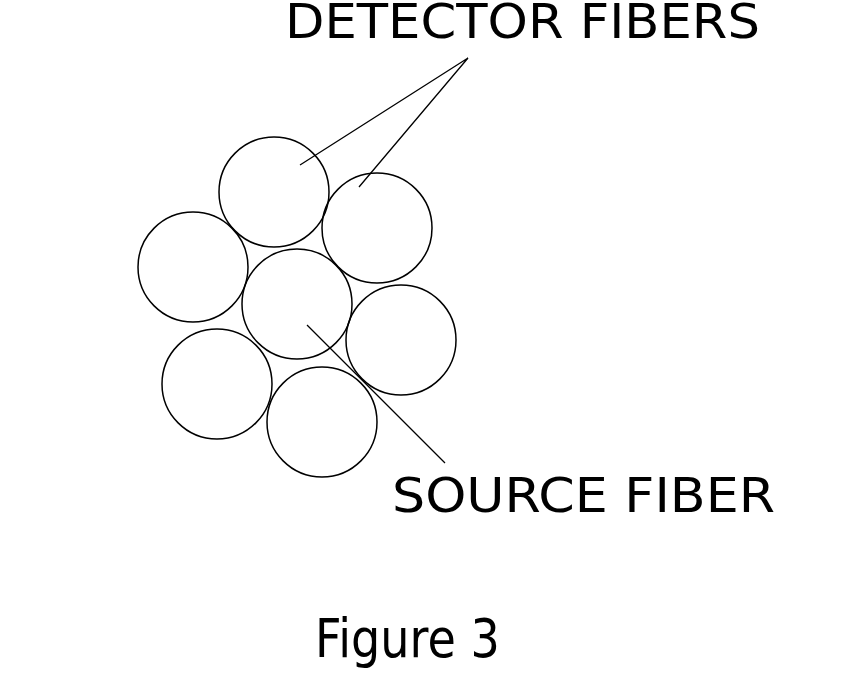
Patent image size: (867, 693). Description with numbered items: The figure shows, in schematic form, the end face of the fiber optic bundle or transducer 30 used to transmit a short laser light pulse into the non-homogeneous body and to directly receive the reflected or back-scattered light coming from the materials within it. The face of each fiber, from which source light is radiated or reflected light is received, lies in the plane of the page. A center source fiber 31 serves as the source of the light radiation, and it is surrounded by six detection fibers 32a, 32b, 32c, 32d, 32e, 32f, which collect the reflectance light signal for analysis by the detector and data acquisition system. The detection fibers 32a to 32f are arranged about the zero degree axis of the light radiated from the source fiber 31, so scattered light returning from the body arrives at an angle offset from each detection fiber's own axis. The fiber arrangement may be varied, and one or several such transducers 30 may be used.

The fiber optic bundle or transducer 30 is at (133, 140).
The source fiber 31 is at (285, 320).
The detection fiber 32a is at (427, 342).
The detection fiber 32b is at (400, 207).
The detection fiber 32c is at (252, 163).
The detection fiber 32d is at (153, 266).
The detection fiber 32e is at (180, 390).
The detection fiber 32f is at (302, 450).